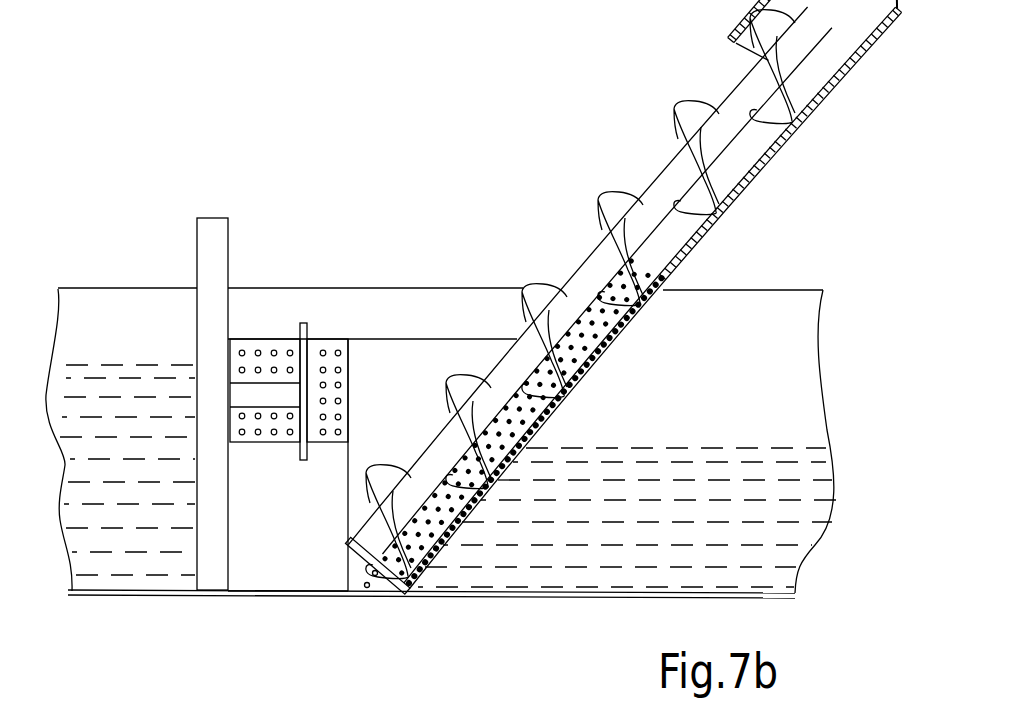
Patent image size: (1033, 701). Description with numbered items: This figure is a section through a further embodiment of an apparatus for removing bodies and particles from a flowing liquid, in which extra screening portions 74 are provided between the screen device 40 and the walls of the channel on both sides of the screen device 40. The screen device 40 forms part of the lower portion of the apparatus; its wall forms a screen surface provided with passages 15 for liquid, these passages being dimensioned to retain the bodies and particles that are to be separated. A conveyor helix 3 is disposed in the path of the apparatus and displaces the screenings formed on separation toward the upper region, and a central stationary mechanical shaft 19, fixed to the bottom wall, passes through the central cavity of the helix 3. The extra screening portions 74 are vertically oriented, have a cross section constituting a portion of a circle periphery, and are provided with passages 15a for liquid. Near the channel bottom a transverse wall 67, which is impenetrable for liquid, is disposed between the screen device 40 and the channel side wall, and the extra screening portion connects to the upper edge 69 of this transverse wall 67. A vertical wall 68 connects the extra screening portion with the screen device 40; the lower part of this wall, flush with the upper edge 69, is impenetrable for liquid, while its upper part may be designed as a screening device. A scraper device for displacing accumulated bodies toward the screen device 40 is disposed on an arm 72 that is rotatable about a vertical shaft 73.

The conveyor helix 3 is at (578, 377).
The passages 15 is at (623, 333).
The passages 15a is at (337, 353).
The central stationary mechanical shaft 19 is at (725, 294).
The screen device 40 is at (463, 594).
The transverse wall 67 is at (283, 552).
The vertical wall 68 is at (432, 357).
The upper edge 69 is at (337, 443).
The arm 72 is at (240, 390).
The vertical shaft 73 is at (212, 255).
The extra screening portions 74 is at (360, 320).